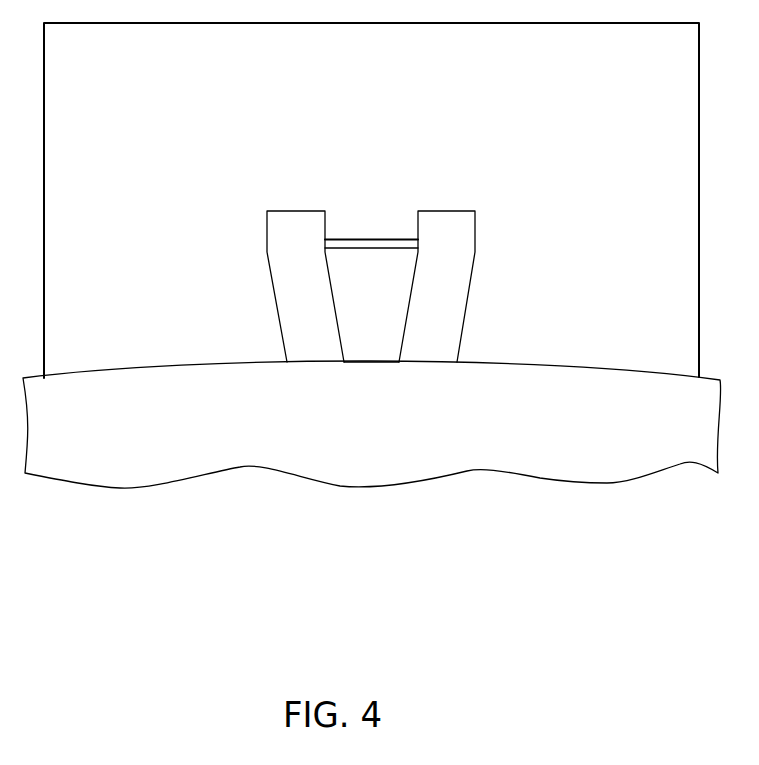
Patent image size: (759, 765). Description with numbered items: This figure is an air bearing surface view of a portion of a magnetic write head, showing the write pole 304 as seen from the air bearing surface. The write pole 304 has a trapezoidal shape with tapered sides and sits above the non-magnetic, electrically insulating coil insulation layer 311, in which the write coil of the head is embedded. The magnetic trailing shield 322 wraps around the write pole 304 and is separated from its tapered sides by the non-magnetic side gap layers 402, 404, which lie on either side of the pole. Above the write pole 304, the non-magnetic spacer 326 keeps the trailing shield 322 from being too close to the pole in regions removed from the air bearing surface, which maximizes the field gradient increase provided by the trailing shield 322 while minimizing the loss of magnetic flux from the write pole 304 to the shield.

The trailing shield 322 is at (399, 119).
The non-magnetic spacer 326 is at (377, 245).
The non-magnetic side gap layer 404 is at (290, 270).
The non-magnetic side gap layer 402 is at (450, 281).
The write pole 304 is at (400, 286).
The coil insulation layer 311 is at (413, 415).